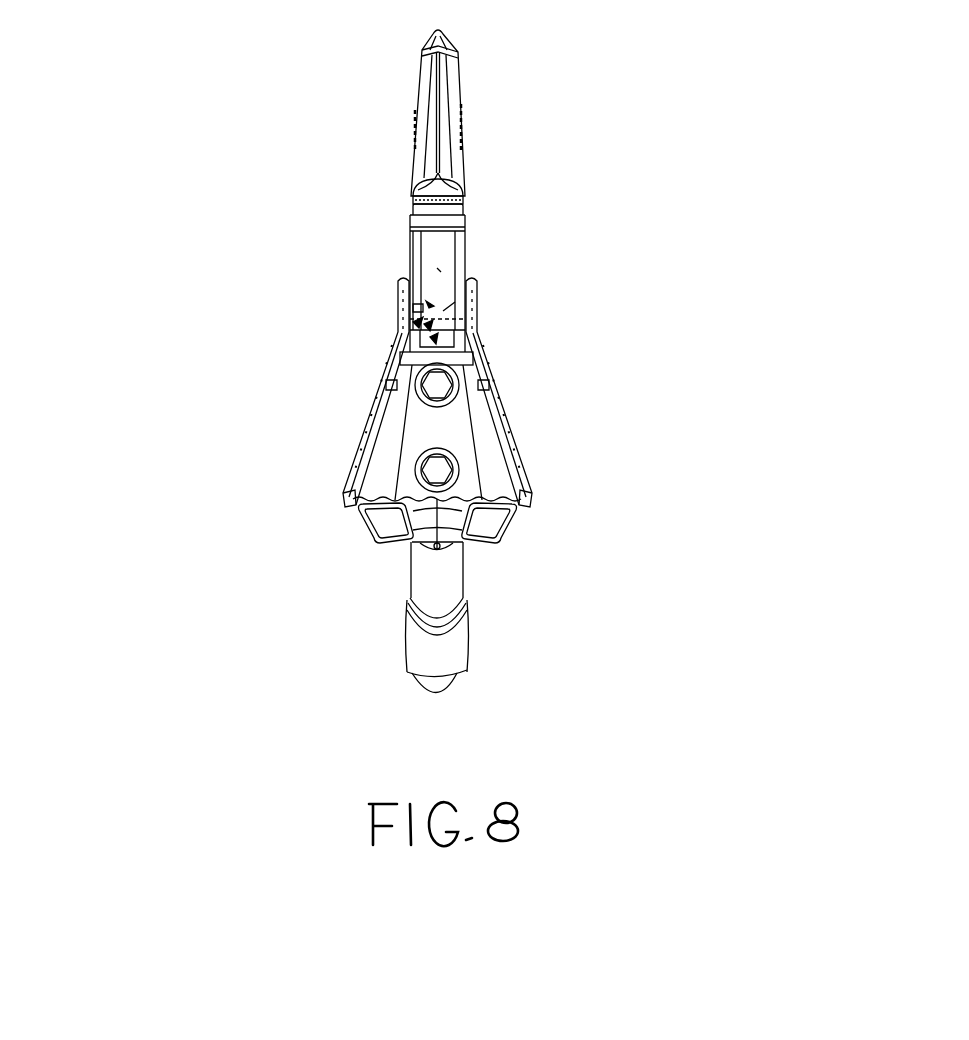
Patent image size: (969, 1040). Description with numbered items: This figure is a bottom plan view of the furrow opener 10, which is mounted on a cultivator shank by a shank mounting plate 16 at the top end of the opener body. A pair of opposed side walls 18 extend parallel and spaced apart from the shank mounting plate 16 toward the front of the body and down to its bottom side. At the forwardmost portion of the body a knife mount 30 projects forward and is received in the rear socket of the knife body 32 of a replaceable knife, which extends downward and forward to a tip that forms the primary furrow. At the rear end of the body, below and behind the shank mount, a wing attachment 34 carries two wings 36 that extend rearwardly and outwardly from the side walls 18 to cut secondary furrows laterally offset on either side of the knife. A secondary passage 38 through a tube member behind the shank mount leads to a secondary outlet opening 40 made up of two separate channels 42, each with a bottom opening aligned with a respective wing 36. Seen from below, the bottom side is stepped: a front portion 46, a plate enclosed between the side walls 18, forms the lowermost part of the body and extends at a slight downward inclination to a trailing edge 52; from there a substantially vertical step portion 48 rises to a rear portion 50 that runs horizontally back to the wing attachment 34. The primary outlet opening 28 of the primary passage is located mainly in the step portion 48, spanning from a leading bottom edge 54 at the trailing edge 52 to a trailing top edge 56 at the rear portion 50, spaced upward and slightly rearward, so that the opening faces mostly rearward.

The furrow opener 10 is at (84, 117).
The shank mounting plate 16 is at (477, 345).
The side walls 18 is at (468, 267).
The primary outlet opening 28 is at (423, 317).
The knife mount 30 is at (467, 205).
The knife body 32 is at (448, 122).
The wing attachment 34 is at (435, 472).
The wings 36 is at (344, 482).
The secondary passage 38 is at (455, 597).
The secondary outlet opening 40 is at (437, 548).
The channels 42 is at (490, 533).
The front portion 46 is at (437, 268).
The step portion 48 is at (450, 308).
The rear portion 50 is at (447, 323).
The trailing edge 52 is at (422, 306).
The leading bottom edge 54 is at (433, 320).
The trailing top edge 56 is at (438, 333).